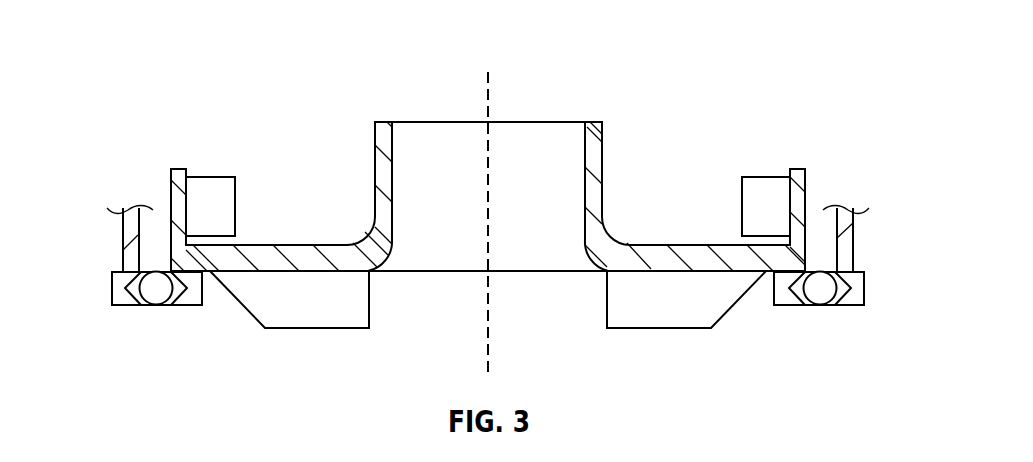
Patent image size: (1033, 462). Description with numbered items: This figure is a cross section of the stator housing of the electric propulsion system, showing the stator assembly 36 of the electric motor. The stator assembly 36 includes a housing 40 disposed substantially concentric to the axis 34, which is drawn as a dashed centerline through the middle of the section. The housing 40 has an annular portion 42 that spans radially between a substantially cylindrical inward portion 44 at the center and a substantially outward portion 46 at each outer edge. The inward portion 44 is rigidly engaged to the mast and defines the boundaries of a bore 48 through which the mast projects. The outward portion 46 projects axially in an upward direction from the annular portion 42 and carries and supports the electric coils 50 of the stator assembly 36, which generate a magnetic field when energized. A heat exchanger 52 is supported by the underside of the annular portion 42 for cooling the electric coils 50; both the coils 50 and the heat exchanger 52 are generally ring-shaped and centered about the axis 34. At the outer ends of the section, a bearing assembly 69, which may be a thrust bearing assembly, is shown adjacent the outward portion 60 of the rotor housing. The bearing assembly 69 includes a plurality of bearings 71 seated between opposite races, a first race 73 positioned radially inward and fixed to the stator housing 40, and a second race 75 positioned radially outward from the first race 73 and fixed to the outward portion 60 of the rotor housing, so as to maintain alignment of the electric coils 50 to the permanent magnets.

The axis 34 is at (490, 95).
The stator assembly 36 is at (657, 48).
The housing 40 is at (610, 150).
The annular portion 42 is at (313, 245).
The inward portion 44 is at (375, 142).
The outward portion 46 is at (171, 178).
The bore 48 is at (552, 209).
The electric coils 50 is at (235, 185).
The heat exchanger 52 is at (371, 300).
The outward portion of the rotor housing 60 is at (122, 240).
The bearing assembly 69 is at (489, 352).
The bearings 71 is at (158, 288).
The first race 73 is at (183, 306).
The second race 75 is at (128, 306).